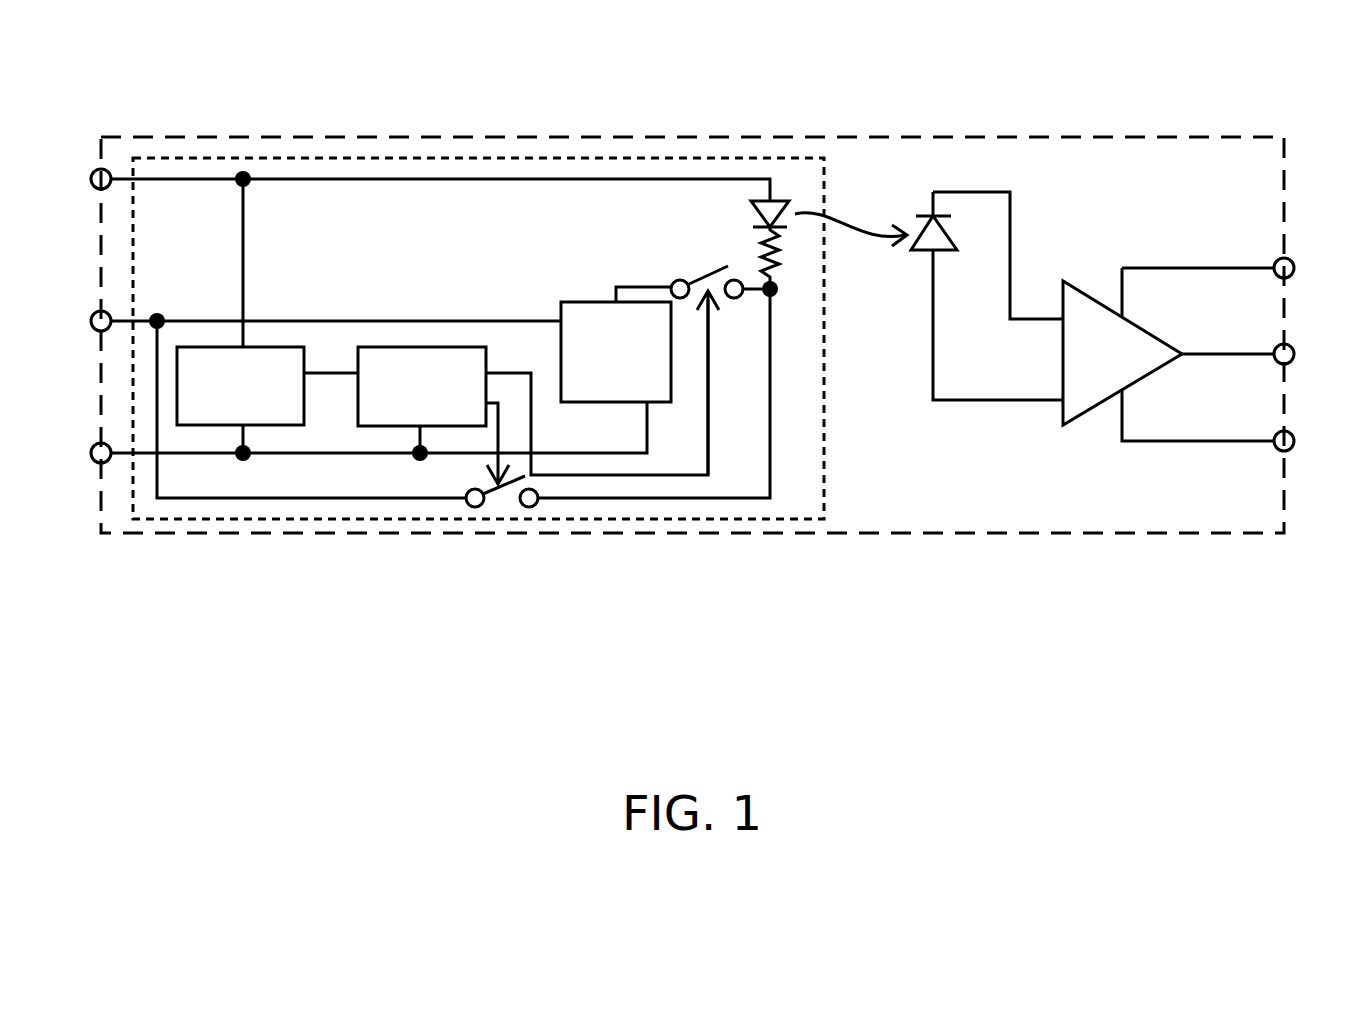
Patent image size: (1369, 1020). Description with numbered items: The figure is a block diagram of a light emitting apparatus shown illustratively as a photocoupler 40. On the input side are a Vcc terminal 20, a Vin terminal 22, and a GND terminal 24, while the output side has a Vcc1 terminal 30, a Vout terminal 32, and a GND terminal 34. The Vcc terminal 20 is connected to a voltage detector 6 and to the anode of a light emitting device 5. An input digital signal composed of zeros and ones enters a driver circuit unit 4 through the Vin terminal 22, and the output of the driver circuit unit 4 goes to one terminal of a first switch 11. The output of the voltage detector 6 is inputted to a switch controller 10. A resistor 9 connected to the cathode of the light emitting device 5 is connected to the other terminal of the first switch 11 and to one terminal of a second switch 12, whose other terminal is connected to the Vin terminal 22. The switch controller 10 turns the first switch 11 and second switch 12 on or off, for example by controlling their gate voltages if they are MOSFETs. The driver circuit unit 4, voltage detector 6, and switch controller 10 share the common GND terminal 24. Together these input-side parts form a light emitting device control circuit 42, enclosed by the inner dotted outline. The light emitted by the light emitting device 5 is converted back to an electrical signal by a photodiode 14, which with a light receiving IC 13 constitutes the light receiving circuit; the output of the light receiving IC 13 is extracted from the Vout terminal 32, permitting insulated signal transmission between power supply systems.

The Vcc terminal 20 is at (96, 173).
The Vin terminal 22 is at (96, 315).
The GND terminal 24 is at (96, 447).
The Vcc1 terminal 30 is at (1292, 263).
The Vout terminal 32 is at (1292, 350).
The GND terminal 34 is at (1292, 437).
The driver circuit unit 4 is at (583, 312).
The light emitting device 5 is at (765, 205).
The voltage detector 6 is at (222, 356).
The resistor 9 is at (781, 257).
The switch controller 10 is at (426, 358).
The first switch 11 is at (706, 282).
The second switch 12 is at (508, 498).
The light receiving IC 13 is at (1071, 296).
The photodiode 14 is at (935, 245).
The photocoupler 40 is at (1030, 536).
The light emitting device control circuit 42 is at (710, 520).